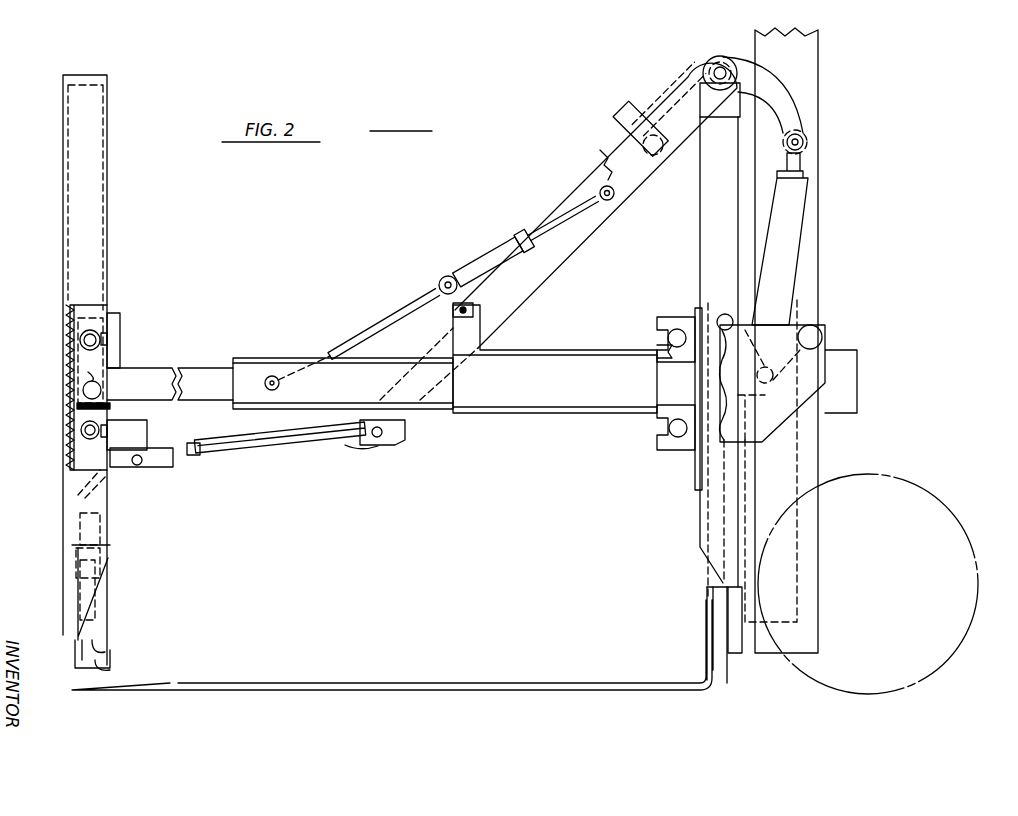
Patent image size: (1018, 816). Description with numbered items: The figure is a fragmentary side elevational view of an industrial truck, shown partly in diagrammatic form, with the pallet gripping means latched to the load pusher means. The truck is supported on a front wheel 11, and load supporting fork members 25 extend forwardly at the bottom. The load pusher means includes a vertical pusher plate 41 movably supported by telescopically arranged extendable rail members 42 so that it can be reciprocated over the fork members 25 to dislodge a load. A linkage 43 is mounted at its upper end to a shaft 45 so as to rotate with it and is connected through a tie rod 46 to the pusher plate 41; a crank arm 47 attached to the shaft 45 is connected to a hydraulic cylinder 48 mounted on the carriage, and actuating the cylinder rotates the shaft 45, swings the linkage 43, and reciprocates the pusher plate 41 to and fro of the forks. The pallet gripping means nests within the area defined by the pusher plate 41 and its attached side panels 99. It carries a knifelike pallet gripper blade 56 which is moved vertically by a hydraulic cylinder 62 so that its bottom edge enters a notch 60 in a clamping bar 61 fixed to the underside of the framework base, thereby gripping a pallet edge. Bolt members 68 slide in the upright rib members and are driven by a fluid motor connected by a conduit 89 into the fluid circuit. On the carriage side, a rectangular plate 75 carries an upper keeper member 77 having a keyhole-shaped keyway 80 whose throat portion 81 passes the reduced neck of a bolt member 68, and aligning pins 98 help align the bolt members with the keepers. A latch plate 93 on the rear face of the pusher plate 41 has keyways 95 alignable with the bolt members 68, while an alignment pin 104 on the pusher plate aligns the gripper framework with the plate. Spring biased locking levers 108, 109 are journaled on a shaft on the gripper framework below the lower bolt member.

The front wheel 11 is at (905, 485).
The fork member 25 is at (465, 688).
The pusher plate 41 is at (63, 237).
The extendable rail member 42 is at (500, 420).
The linkage 43 is at (505, 270).
The shaft 45 is at (720, 68).
The tie rod 46 is at (280, 443).
The crank arm 47 is at (777, 93).
The hydraulic cylinder 48 is at (790, 222).
The pallet gripper blade 56 is at (77, 640).
The notch 60 is at (78, 654).
The clamping bar 61 is at (110, 670).
The hydraulic cylinder 62 is at (100, 522).
The bolt member 68 is at (80, 347).
The rectangular plate 75 is at (695, 480).
The upper keeper member 77 is at (670, 318).
The keyway 80 is at (660, 428).
The throat portion 81 is at (657, 322).
The conduit 89 is at (62, 378).
The latch plate 93 is at (109, 358).
The keyway 95 is at (104, 338).
The aligning pin 98 is at (670, 363).
The side panel 99 is at (103, 250).
The alignment pin 104 is at (108, 406).
The spring biased locking lever 108 is at (77, 490).
The spring biased locking lever 109 is at (118, 473).